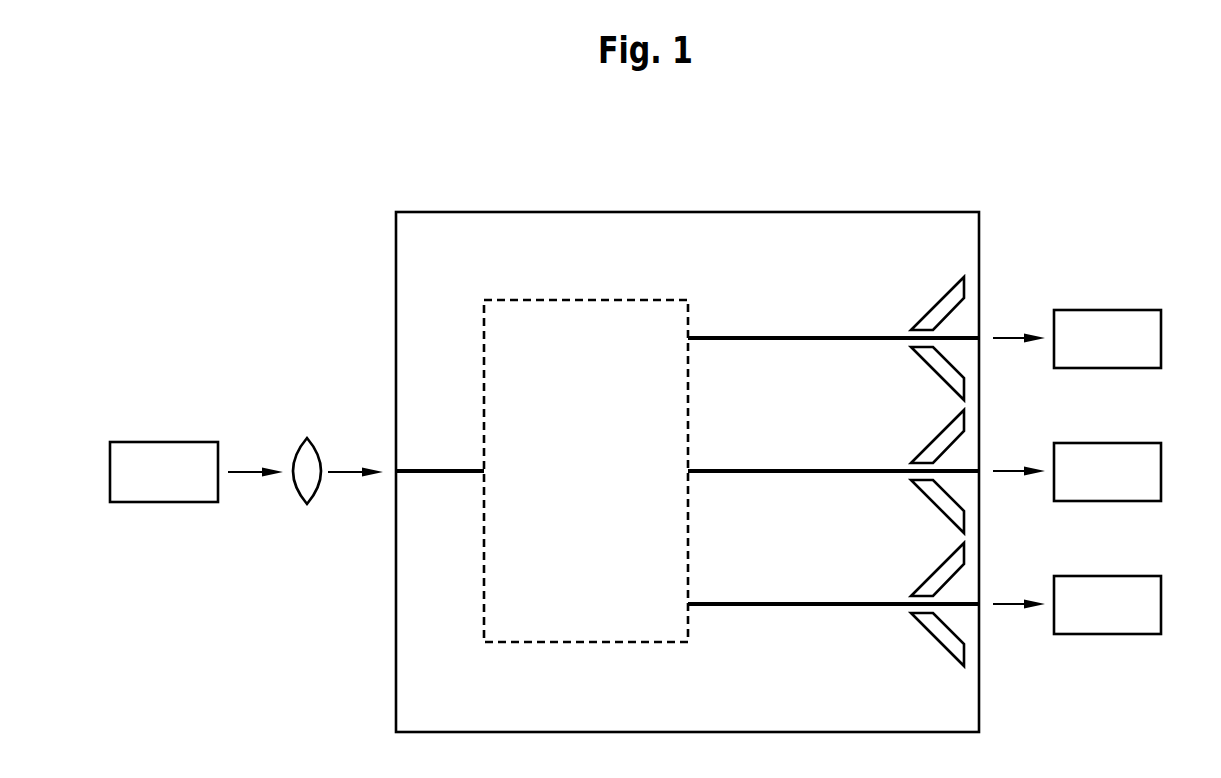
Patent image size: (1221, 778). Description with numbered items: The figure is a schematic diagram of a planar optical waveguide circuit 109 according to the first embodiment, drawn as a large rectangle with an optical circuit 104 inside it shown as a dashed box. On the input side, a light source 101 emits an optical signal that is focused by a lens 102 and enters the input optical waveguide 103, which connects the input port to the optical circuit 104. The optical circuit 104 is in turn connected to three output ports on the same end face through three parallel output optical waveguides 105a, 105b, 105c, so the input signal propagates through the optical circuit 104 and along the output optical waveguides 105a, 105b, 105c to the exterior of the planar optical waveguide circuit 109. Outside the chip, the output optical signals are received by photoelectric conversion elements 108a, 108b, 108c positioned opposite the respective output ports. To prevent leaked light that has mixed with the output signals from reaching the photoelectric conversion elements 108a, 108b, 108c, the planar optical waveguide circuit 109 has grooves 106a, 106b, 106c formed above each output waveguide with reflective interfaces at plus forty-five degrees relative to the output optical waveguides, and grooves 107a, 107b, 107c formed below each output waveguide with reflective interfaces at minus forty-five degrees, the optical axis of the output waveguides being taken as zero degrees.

The light source 101 is at (198, 441).
The lens 102 is at (316, 445).
The input optical waveguide 103 is at (436, 468).
The optical circuit 104 is at (668, 299).
The output optical waveguide 105a is at (724, 335).
The output optical waveguide 105b is at (724, 468).
The output optical waveguide 105c is at (724, 601).
The groove 106a is at (931, 304).
The groove 106b is at (931, 437).
The groove 106c is at (931, 570).
The groove 107a is at (928, 375).
The groove 107b is at (928, 508).
The groove 107c is at (928, 641).
The photoelectric conversion element 108a is at (1141, 310).
The photoelectric conversion element 108b is at (1141, 443).
The photoelectric conversion element 108c is at (1141, 576).
The planar optical waveguide circuit 109 is at (952, 211).